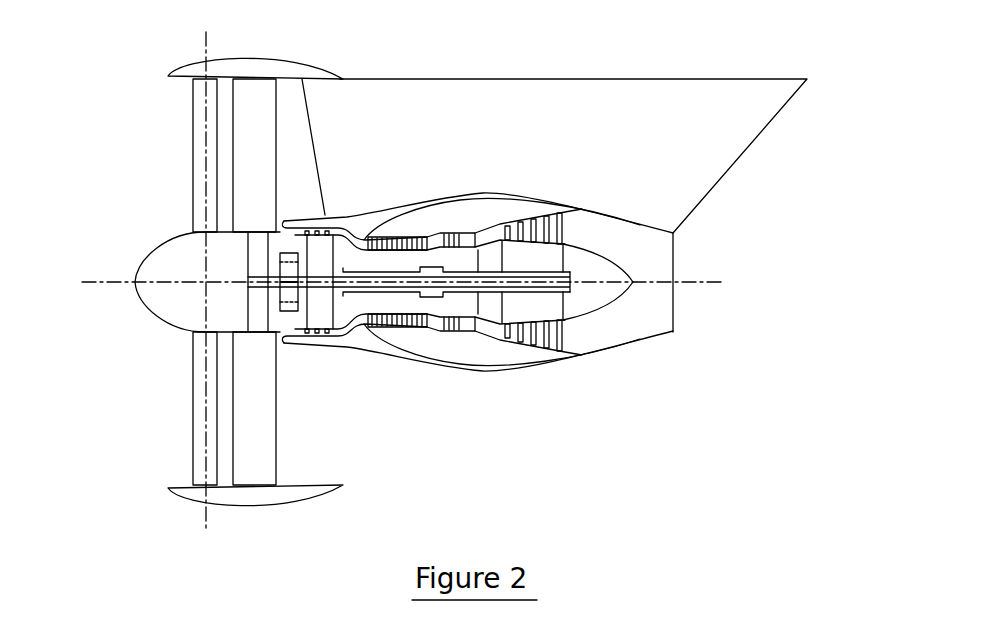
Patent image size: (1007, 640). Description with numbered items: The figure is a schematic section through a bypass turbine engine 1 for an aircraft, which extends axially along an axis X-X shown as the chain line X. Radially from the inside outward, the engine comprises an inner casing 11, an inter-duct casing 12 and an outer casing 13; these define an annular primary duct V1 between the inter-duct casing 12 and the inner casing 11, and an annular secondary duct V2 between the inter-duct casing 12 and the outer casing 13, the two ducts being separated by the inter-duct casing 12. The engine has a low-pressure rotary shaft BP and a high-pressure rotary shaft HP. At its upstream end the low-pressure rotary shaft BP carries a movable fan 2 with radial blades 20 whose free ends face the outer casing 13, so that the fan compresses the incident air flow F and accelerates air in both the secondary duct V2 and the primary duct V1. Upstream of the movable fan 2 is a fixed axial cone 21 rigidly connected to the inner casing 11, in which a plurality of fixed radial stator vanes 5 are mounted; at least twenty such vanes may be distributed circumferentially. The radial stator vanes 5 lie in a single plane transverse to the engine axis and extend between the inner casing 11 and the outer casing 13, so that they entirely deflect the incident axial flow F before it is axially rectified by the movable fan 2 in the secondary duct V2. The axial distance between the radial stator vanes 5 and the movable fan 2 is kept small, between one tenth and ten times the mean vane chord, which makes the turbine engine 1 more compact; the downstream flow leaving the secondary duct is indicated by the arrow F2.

The turbine engine 1 is at (138, 151).
The movable fan 2 is at (290, 136).
The radial stator vanes 5 is at (195, 163).
The inner casing 11 is at (281, 231).
The inter-duct casing 12 is at (340, 213).
The outer casing 13 is at (243, 62).
The radial blades 20 is at (267, 175).
The fixed axial cone 21 is at (142, 265).
The low-pressure rotary shaft BP is at (338, 292).
The high-pressure rotary shaft HP is at (433, 327).
The primary duct V1 is at (487, 193).
The secondary duct V2 is at (446, 135).
The incident air flow F is at (90, 195).
The secondary flow F2 is at (678, 137).
The axis X is at (404, 282).